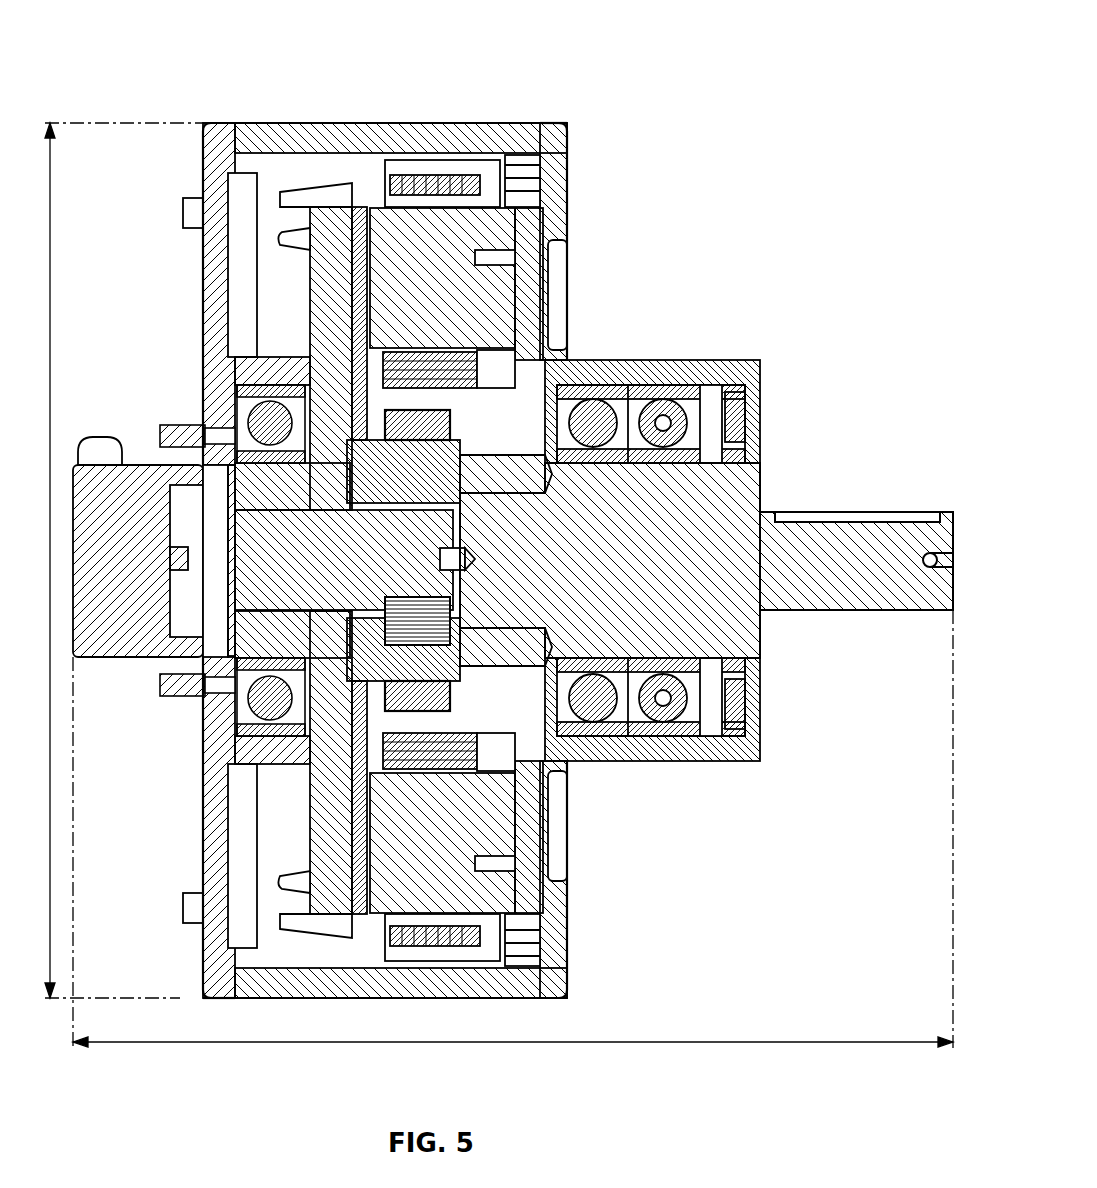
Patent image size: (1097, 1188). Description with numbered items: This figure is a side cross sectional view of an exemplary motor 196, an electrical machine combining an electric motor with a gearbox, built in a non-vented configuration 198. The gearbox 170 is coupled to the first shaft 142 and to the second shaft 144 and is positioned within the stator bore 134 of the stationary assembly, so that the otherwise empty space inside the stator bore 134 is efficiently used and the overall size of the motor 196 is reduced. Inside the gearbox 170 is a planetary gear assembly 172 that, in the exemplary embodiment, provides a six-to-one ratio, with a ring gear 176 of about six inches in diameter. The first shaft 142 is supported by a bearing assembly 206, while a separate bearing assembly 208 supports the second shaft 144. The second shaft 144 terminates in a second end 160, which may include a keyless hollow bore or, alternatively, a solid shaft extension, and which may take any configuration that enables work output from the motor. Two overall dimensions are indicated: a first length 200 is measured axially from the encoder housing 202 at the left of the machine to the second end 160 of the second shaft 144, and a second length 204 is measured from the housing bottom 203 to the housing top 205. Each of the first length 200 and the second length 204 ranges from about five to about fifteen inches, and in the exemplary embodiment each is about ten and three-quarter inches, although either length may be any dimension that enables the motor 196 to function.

The motor 196 is at (797, 48).
The non-vented configuration 198 is at (218, 125).
The ring gear 176 is at (405, 400).
The housing top 205 is at (530, 123).
The second length 204 is at (52, 232).
The stator bore 134 is at (503, 368).
The gearbox 170 is at (560, 380).
The bearing assembly 208 is at (665, 397).
The second shaft 144 is at (745, 520).
The second end 160 is at (950, 537).
The encoder housing 202 is at (68, 478).
The bearing assembly 206 is at (235, 422).
The first shaft 142 is at (270, 580).
The planetary gear assembly 172 is at (425, 655).
The housing bottom 203 is at (218, 1000).
The first length 200 is at (510, 1048).